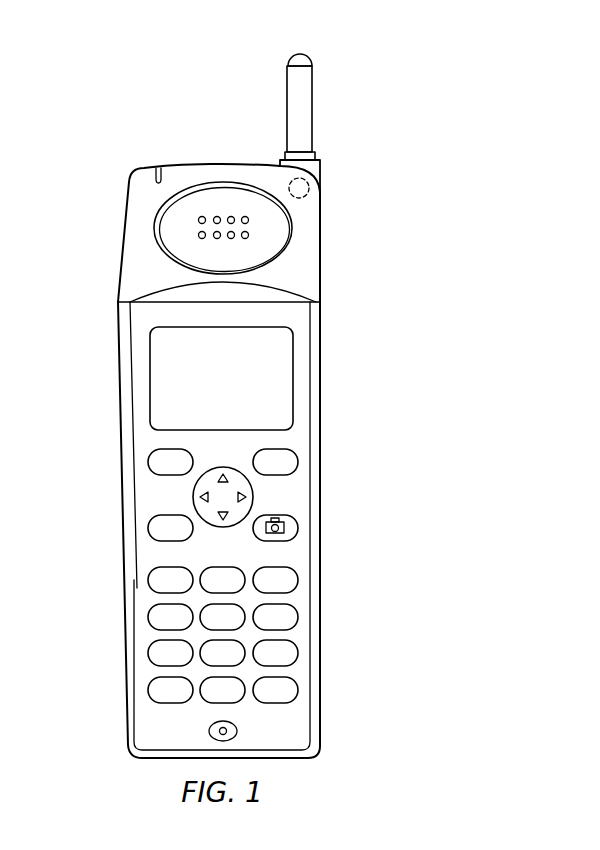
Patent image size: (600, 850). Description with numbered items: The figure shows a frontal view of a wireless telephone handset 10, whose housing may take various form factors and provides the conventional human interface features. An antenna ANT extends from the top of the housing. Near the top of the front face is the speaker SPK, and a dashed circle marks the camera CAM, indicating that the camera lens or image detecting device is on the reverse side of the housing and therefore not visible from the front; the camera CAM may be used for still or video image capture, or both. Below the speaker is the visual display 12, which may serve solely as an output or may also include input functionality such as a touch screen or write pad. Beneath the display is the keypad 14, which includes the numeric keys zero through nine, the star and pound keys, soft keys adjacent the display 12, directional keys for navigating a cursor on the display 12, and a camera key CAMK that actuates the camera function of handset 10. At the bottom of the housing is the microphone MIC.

The wireless telephone handset 10 is at (112, 81).
The visual display 12 is at (210, 392).
The keypad 14 is at (113, 455).
The antenna ANT is at (306, 44).
The camera CAM is at (301, 201).
The speaker SPK is at (281, 256).
The camera key CAMK is at (279, 512).
The microphone MIC is at (240, 732).